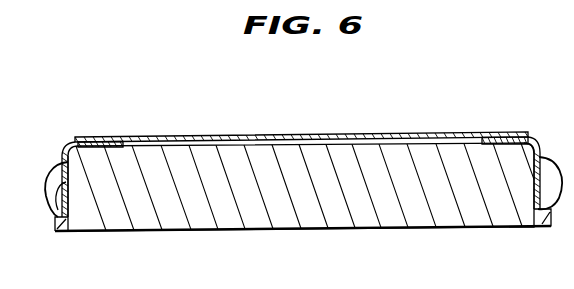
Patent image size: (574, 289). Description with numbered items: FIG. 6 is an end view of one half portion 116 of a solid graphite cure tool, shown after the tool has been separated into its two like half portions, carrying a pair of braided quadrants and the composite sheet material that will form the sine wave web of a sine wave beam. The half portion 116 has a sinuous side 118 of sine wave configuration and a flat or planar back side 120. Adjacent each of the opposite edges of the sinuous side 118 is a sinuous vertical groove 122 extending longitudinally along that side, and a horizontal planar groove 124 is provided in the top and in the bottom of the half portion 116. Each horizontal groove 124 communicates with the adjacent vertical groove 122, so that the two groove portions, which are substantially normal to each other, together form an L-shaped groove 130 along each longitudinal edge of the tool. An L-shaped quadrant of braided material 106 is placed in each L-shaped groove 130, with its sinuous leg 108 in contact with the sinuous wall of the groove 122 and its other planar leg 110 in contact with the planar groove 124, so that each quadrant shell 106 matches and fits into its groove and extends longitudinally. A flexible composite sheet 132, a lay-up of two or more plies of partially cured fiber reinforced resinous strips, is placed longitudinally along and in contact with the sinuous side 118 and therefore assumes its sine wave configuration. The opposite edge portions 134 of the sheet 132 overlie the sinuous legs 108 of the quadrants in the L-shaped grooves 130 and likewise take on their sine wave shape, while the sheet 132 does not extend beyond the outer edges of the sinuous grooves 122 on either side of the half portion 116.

The L-shaped quadrant of braided material 106 is at (73, 121).
The sinuous leg 108 is at (106, 146).
The planar leg 110 is at (69, 199).
The half portion 116 is at (546, 128).
The sinuous side 118 is at (255, 141).
The planar back side 120 is at (302, 230).
The sinuous vertical groove 122 is at (117, 146).
The horizontal planar groove 124 is at (66, 183).
The L-shaped groove 130 is at (64, 233).
The flexible composite sheet 132 is at (360, 134).
The edge portion 134 is at (90, 146).